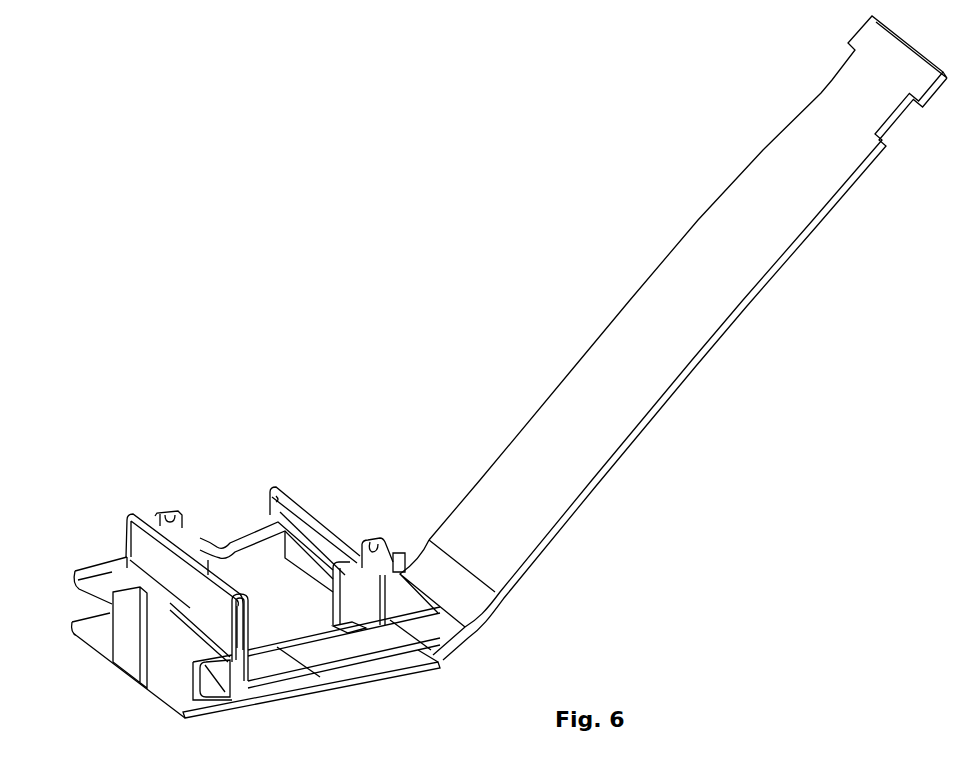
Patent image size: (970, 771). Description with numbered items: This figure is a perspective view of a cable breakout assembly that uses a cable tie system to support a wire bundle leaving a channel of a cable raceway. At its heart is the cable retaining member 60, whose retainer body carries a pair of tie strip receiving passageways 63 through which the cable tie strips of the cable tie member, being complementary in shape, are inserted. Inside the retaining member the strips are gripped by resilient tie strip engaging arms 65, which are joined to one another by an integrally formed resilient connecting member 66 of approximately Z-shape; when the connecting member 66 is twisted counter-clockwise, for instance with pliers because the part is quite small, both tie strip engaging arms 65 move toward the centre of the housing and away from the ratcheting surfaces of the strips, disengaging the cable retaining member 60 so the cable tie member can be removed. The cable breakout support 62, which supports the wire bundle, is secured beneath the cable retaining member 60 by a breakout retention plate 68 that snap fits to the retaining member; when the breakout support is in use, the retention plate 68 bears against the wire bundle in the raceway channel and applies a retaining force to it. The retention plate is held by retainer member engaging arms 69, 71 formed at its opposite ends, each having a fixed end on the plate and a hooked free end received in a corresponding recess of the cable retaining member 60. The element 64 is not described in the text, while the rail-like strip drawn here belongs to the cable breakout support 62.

The cable retaining member 60 is at (102, 482).
The cable breakout support 62 is at (658, 391).
The tie strip receiving passageways 63 is at (355, 634).
The rail 64 is at (282, 487).
The tie strip engaging arms 65 is at (178, 513).
The connecting member 66 is at (266, 522).
The breakout retention plate 68 is at (292, 700).
The retainer member engaging arm 69 is at (126, 660).
The retainer member engaging arm 71 is at (397, 552).